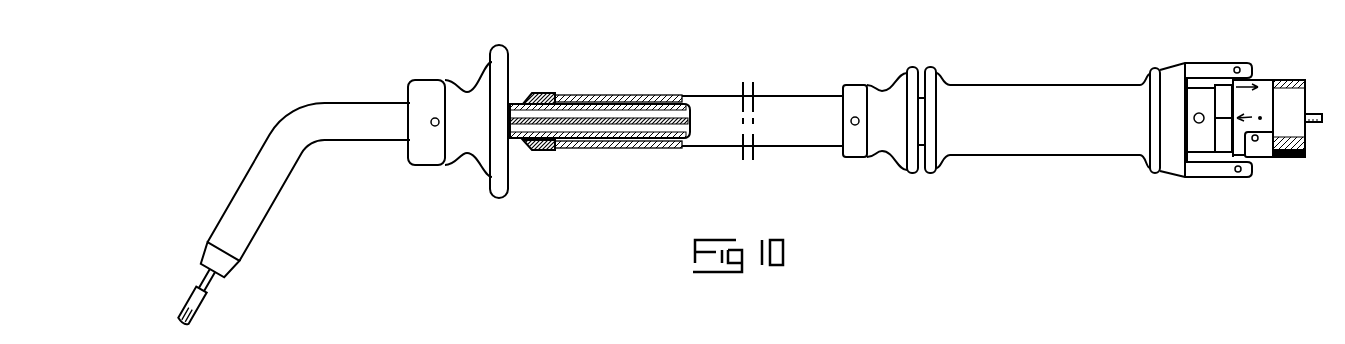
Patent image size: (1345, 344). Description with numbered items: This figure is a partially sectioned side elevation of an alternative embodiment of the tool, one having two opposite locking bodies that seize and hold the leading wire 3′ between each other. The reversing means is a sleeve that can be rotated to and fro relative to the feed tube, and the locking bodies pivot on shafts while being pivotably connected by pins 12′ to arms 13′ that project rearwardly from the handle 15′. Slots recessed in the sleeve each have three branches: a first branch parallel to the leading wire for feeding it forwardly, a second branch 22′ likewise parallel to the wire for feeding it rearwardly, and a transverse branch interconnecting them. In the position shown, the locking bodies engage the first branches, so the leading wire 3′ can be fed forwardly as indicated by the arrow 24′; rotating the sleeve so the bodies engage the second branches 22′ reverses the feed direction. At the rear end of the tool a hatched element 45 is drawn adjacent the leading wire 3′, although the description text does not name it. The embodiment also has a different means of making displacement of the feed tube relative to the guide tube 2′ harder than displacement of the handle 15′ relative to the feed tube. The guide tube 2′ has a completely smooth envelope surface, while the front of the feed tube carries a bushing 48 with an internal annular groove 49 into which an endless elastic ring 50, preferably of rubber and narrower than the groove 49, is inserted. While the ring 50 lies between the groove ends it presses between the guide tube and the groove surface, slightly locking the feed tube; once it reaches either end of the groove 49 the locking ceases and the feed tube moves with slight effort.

The guide tube 2′ is at (513, 106).
The bushing 48 is at (550, 95).
The internal annular groove 49 is at (553, 147).
The endless elastic ring 50 is at (540, 151).
The handle 15′ is at (1075, 85).
The arms 13′ is at (1201, 63).
The pins 12′ is at (1237, 66).
The connector plug 45 is at (1284, 80).
The arrow 24′ is at (1247, 120).
The second branch 22′ is at (1267, 140).
The leading wire 3′ is at (1315, 123).